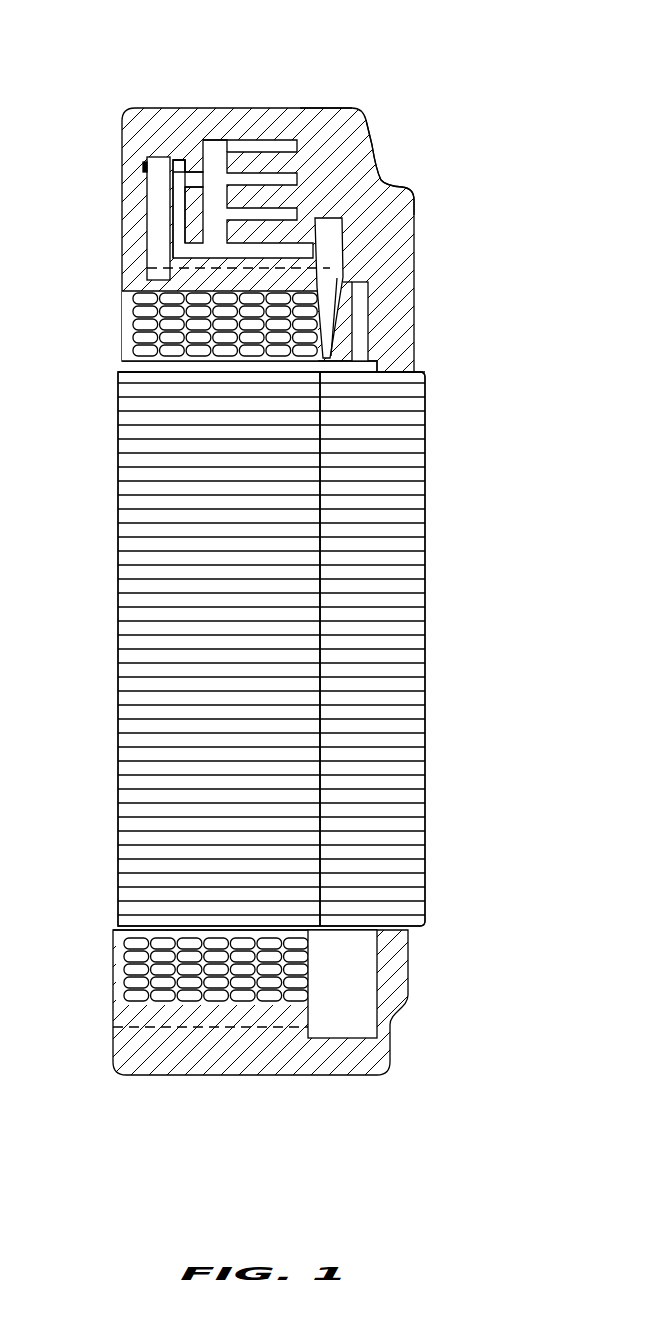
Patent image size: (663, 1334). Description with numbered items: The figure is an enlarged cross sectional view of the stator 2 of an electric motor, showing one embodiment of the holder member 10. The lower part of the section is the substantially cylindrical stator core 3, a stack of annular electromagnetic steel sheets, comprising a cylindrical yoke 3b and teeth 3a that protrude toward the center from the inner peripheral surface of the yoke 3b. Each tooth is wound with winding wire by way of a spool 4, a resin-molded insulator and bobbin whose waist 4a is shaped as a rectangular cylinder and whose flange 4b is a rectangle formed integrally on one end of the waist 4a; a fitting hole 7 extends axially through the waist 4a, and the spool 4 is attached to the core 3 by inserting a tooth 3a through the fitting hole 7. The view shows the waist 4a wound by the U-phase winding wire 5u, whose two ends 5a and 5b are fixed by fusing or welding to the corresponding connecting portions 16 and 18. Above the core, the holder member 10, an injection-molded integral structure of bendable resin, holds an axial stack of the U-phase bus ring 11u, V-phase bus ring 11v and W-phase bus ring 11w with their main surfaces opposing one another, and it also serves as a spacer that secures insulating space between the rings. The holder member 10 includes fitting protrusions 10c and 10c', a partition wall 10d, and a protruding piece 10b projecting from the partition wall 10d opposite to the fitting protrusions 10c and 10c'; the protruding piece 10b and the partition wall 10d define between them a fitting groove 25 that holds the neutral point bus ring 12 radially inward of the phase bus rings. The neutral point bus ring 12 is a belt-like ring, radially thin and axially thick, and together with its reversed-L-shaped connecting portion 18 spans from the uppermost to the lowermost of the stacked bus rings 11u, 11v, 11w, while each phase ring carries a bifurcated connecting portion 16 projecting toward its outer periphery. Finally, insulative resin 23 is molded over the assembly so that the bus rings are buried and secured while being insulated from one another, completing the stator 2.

The stator 2 is at (271, 571).
The stator core 3 is at (425, 513).
The teeth 3a is at (118, 540).
The yoke 3b is at (427, 686).
The spool 4 is at (358, 1028).
The waist 4a is at (120, 363).
The flange 4b is at (357, 322).
The end of winding wire 5a is at (333, 258).
The end of winding wire 5b is at (150, 158).
The U-phase winding wire 5u is at (130, 970).
The fitting hole 7 is at (150, 922).
The holder member 10 is at (247, 139).
The protruding piece 10b is at (176, 208).
The fitting protrusion 10c is at (333, 79).
The fitting protrusion 10c' is at (436, 197).
The partition wall 10d is at (217, 138).
The U-phase bus ring 11u is at (300, 212).
The V-phase bus ring 11v is at (280, 187).
The W-phase bus ring 11w is at (262, 160).
The neutral point bus ring 12 is at (174, 172).
The connecting portion 16 is at (374, 184).
The connecting portion 18 is at (182, 164).
The insulative resin 23 is at (395, 356).
The fitting groove 25 is at (187, 228).